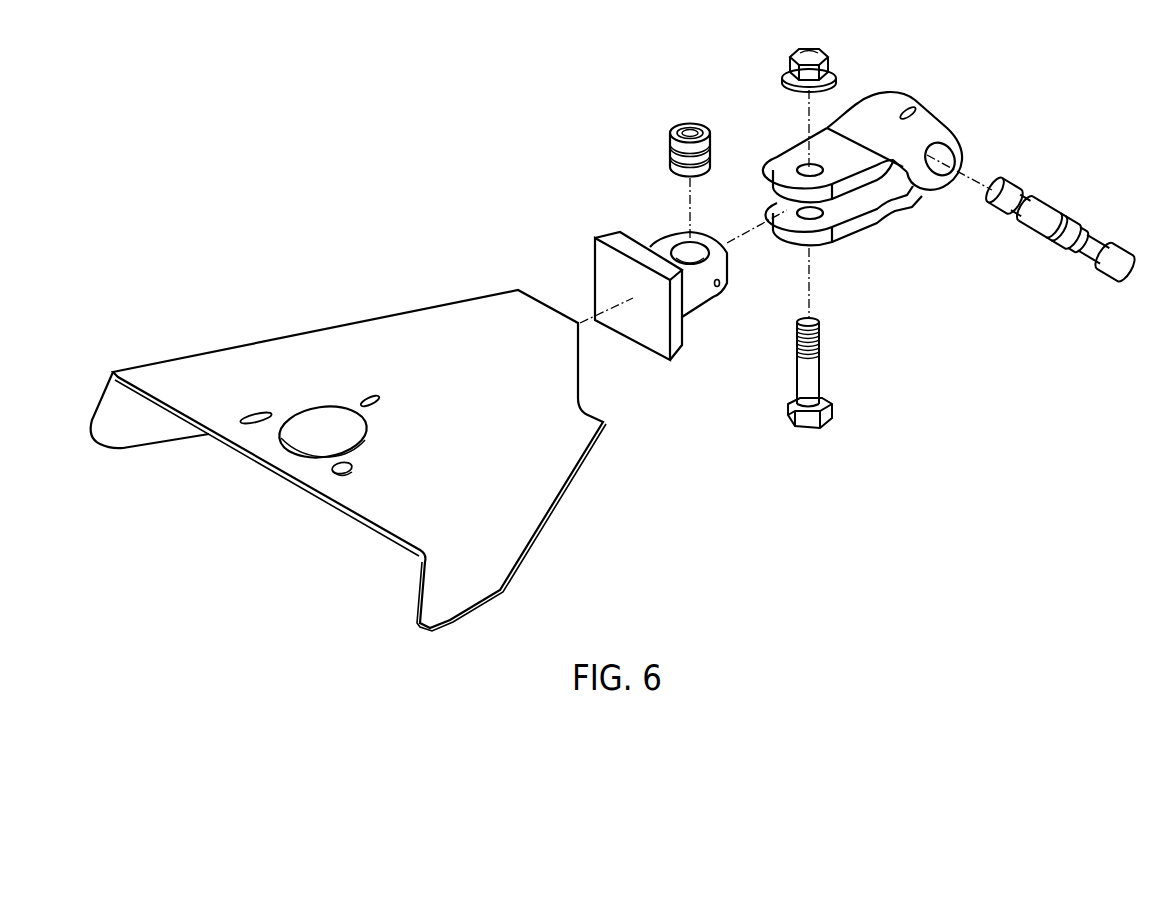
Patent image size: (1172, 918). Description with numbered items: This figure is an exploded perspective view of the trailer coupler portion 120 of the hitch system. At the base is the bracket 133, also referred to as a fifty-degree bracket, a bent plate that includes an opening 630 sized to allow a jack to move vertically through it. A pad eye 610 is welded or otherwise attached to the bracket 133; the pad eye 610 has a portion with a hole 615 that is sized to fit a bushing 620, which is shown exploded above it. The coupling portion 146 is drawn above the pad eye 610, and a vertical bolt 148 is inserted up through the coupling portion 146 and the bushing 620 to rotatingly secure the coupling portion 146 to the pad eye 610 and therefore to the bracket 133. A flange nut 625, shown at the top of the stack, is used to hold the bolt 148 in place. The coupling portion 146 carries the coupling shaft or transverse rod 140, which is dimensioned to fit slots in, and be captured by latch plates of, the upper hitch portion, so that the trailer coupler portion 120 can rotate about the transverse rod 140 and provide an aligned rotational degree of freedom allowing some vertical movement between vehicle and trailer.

The trailer coupler portion 120 is at (395, 113).
The bracket 133 is at (316, 327).
The opening 630 is at (324, 425).
The pad eye 610 is at (595, 272).
The hole 615 is at (683, 246).
The bushing 620 is at (672, 150).
The flange nut 625 is at (806, 55).
The coupling portion 146 is at (930, 121).
The vertical bolt 148 is at (823, 365).
The transverse rod 140 is at (1095, 226).